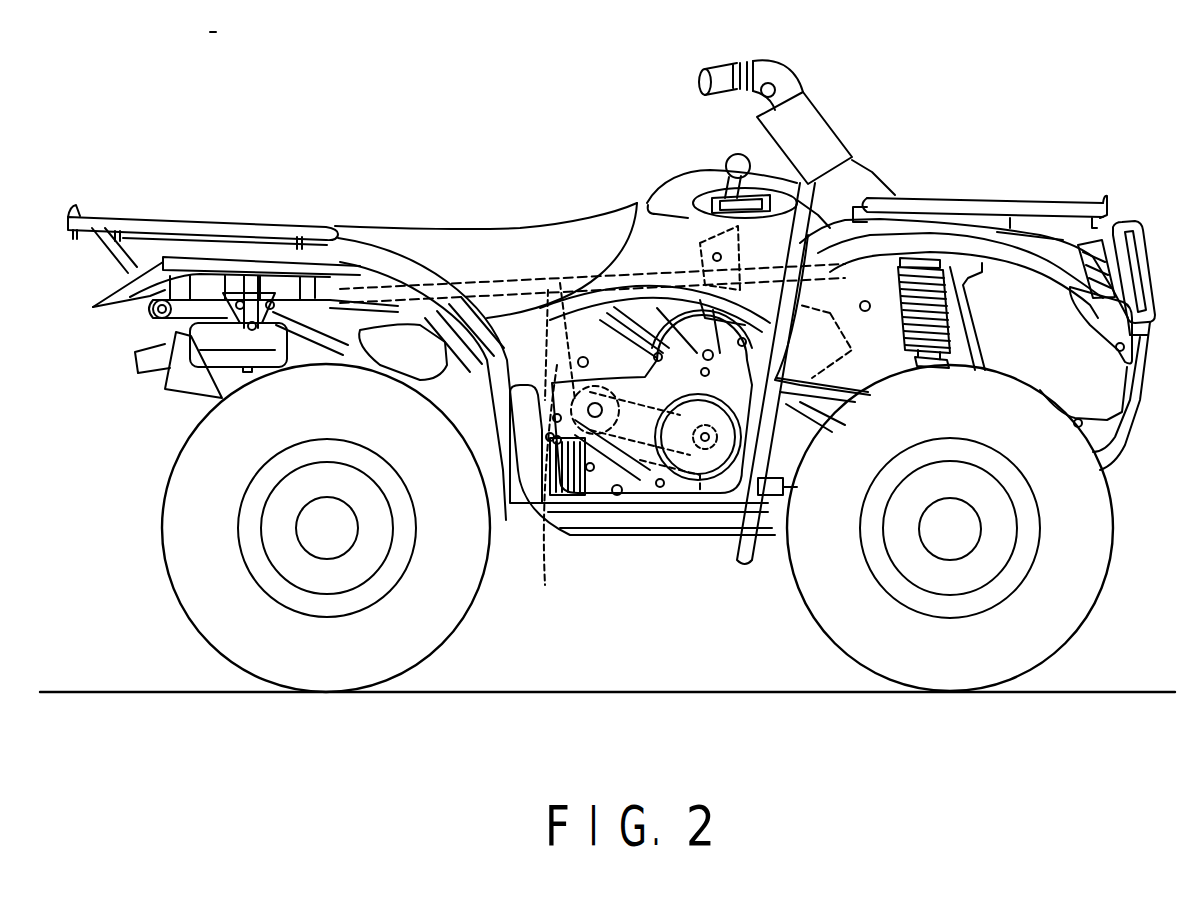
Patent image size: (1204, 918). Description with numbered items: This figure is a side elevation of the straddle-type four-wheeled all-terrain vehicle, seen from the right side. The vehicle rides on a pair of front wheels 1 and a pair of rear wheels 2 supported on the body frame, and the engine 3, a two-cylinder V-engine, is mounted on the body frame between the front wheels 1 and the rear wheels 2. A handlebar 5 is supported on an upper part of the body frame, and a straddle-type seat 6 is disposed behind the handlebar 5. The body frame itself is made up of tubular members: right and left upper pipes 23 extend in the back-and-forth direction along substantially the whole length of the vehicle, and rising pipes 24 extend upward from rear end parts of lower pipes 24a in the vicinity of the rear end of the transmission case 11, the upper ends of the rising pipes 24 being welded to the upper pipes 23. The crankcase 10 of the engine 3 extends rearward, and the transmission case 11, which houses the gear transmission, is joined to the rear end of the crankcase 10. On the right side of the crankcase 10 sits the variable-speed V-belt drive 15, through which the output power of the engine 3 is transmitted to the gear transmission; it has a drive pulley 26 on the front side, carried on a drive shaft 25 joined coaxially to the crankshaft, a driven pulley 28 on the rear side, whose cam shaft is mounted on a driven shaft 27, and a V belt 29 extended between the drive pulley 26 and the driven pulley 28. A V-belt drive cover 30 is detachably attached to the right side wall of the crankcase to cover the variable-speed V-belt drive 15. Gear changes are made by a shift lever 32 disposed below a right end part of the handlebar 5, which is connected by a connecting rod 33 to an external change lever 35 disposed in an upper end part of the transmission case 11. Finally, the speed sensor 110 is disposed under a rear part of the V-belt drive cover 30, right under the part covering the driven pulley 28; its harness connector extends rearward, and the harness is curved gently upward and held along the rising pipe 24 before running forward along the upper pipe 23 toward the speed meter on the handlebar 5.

The front wheels 1 is at (1083, 550).
The rear wheels 2 is at (197, 560).
The engine 3 is at (668, 280).
The handlebar 5 is at (772, 86).
The straddle-type seat 6 is at (465, 227).
The crankcase 10 is at (727, 500).
The transmission case 11 is at (545, 420).
The variable-speed V-belt drive 15 is at (624, 459).
The upper pipes 23 is at (332, 295).
The rising pipes 24 is at (560, 405).
The lower pipes 24a is at (620, 540).
The drive shaft 25 is at (705, 437).
The drive pulley 26 is at (722, 470).
The driven shaft 27 is at (567, 487).
The driven pulley 28 is at (550, 385).
The V belt 29 is at (637, 477).
The V-belt drive cover 30 is at (560, 380).
The shift lever 32 is at (740, 237).
The connecting rod 33 is at (572, 300).
The external change lever 35 is at (540, 333).
The speed sensor 110 is at (545, 492).